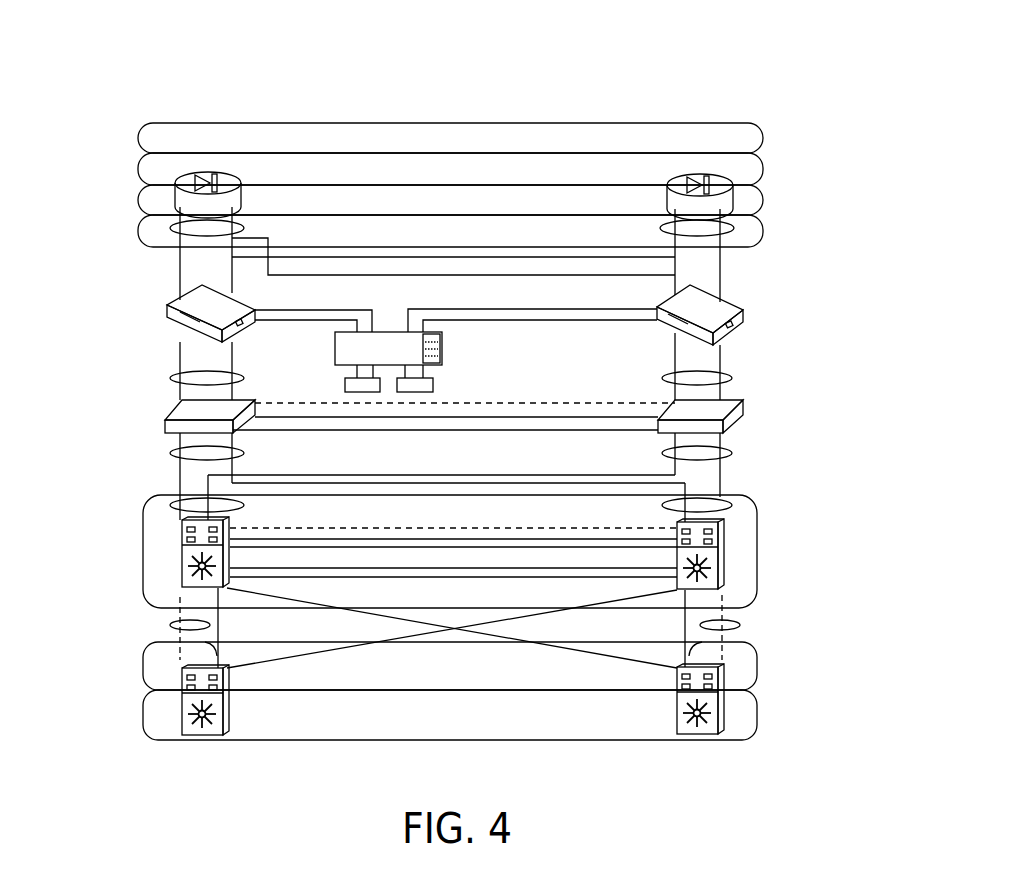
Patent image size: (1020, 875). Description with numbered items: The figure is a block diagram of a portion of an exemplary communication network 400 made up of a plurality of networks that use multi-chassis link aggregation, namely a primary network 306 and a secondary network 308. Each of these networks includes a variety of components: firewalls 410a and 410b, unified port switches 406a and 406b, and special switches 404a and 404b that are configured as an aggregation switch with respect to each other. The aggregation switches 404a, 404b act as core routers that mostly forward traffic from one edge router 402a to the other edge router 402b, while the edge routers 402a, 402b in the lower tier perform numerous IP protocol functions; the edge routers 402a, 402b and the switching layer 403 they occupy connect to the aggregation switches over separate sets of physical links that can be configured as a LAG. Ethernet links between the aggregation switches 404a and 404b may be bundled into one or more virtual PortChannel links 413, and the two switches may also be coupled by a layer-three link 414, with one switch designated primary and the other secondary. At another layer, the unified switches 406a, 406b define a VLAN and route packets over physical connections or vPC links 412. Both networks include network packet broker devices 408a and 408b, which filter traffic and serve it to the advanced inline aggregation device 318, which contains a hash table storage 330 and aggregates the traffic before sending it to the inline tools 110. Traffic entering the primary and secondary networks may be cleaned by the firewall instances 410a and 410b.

The communication network 400 is at (693, 86).
The primary network 306 is at (63, 380).
The secondary network 308 is at (838, 283).
The advanced inline aggregation device 318 is at (335, 350).
The hash table storage 330 is at (442, 345).
The inline tools 110 is at (345, 385).
The edge router 402a is at (182, 705).
The edge router 402b is at (720, 705).
The switch layer 403 is at (600, 685).
The aggregation switch 404a is at (182, 545).
The aggregation switch 404b is at (725, 555).
The unified port switch 406a is at (167, 420).
The unified port switch 406b is at (743, 410).
The network packet broker device 408a is at (168, 305).
The network packet broker device 408b is at (745, 315).
The firewall 410a is at (172, 183).
The firewall 410b is at (727, 190).
The vPC link 412 is at (570, 425).
The virtual PortChannel link 413 is at (487, 547).
The layer-3 link 414 is at (445, 572).